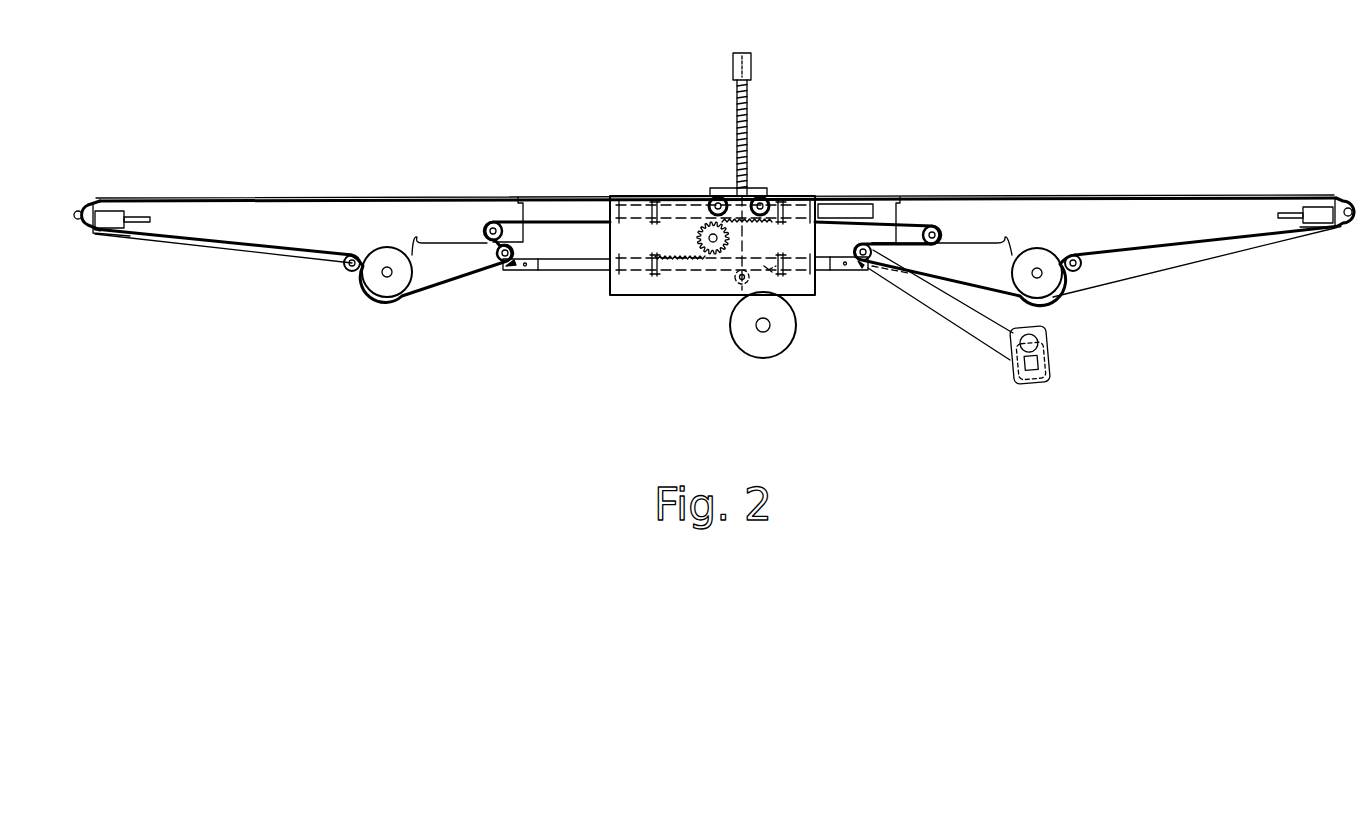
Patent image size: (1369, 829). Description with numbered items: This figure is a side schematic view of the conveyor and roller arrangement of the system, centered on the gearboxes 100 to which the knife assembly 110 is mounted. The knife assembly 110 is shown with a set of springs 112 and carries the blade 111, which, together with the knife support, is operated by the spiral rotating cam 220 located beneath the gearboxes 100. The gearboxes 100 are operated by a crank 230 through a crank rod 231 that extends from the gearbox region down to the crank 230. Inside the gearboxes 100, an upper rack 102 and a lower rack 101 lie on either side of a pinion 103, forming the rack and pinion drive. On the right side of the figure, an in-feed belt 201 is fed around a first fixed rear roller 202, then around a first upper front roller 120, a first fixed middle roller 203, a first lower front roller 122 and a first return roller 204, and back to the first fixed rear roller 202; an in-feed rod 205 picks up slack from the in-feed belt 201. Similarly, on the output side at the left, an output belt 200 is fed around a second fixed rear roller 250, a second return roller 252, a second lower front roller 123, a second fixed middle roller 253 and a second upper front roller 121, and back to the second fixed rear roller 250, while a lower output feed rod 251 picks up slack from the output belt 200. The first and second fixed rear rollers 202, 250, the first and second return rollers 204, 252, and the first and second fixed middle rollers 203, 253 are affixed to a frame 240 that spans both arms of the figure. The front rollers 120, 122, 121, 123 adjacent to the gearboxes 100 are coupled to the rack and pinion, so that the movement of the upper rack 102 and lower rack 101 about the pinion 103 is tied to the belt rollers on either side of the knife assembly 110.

The gearbox 100 is at (614, 301).
The lower rack 101 is at (559, 275).
The upper rack 102 is at (856, 199).
The pinion 103 is at (700, 246).
The knife assembly 110 is at (721, 68).
The blade 111 is at (728, 112).
The springs 112 is at (746, 106).
The first upper front roller 120 is at (768, 193).
The second upper front roller 121 is at (719, 194).
The first lower front roller 122 is at (858, 266).
The second lower front roller 123 is at (501, 264).
The output belt 200 is at (188, 235).
The in-feed belt 201 is at (1251, 231).
The first fixed rear roller 202 is at (1346, 228).
The first fixed middle roller 203 is at (938, 228).
The first return roller 204 is at (1050, 298).
The in-feed rod 205 is at (1080, 269).
The spiral rotating cam 220 is at (771, 357).
The crank 230 is at (1034, 387).
The crank rod 231 is at (960, 331).
The frame 240 is at (221, 266).
The second fixed rear roller 250 is at (76, 226).
The lower output feed rod 251 is at (345, 270).
The second return roller 252 is at (384, 296).
The second fixed middle roller 253 is at (488, 240).